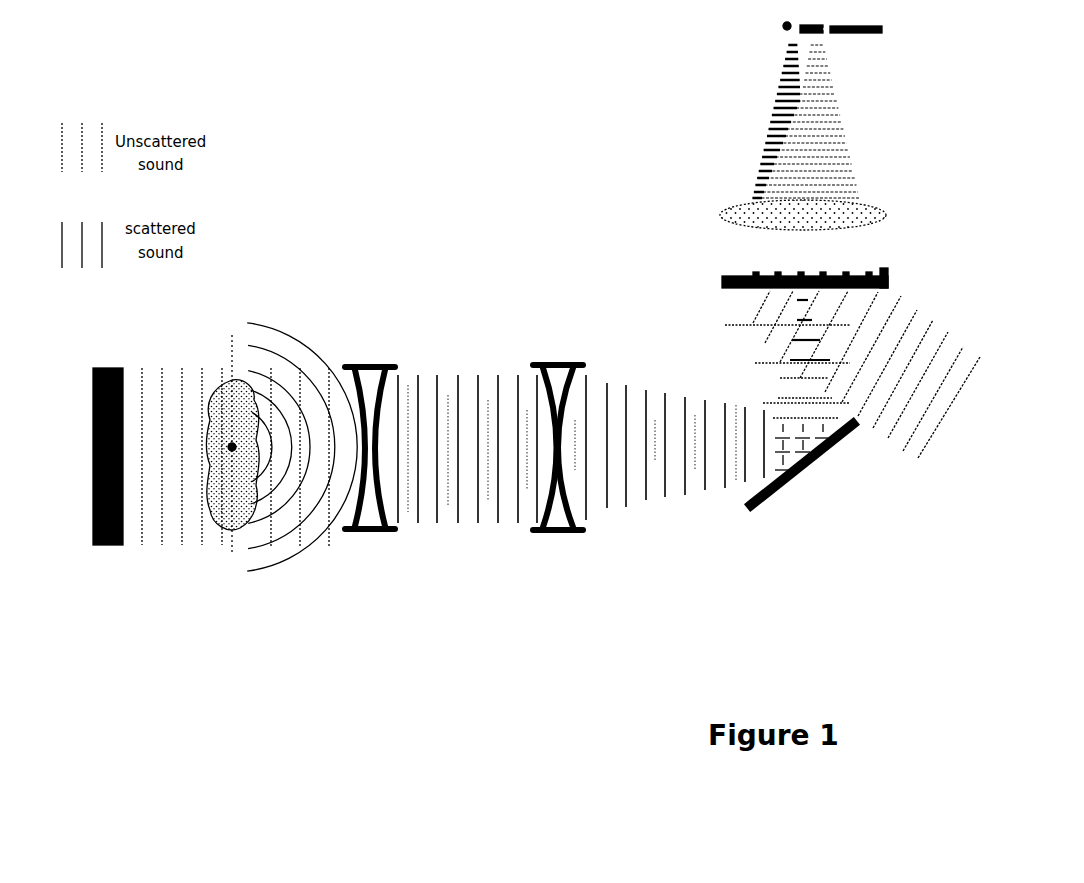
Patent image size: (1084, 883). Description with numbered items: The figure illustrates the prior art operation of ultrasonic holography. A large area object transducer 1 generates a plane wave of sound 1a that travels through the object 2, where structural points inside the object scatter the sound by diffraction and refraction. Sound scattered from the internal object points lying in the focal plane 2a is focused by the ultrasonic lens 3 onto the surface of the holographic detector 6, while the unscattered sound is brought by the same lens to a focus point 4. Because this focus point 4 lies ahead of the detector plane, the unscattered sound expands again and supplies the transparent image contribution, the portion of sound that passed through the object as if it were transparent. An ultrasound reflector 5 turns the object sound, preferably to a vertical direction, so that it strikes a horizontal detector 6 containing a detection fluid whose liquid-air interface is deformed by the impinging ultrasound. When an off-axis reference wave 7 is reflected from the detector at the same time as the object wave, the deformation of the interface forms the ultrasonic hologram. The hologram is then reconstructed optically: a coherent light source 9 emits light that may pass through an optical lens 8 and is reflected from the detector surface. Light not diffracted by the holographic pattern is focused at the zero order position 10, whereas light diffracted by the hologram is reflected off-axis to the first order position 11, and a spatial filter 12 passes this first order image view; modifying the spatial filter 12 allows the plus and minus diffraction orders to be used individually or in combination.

The object transducer 1 is at (108, 475).
The plane wave of sound 1a is at (148, 360).
The object 2 is at (232, 454).
The focal plane 2a is at (302, 334).
The ultrasonic lens 3 is at (464, 467).
The focus point of the unscattered sound 4 is at (618, 470).
The ultrasound reflector 5 is at (802, 464).
The holographic detector 6 is at (888, 277).
The reference wave 7 is at (945, 331).
The optical lens 8 is at (812, 209).
The coherent light source 9 is at (778, 27).
The zero order light position 10 is at (811, 22).
The first order position 11 is at (835, 20).
The spatial filter 12 is at (857, 37).